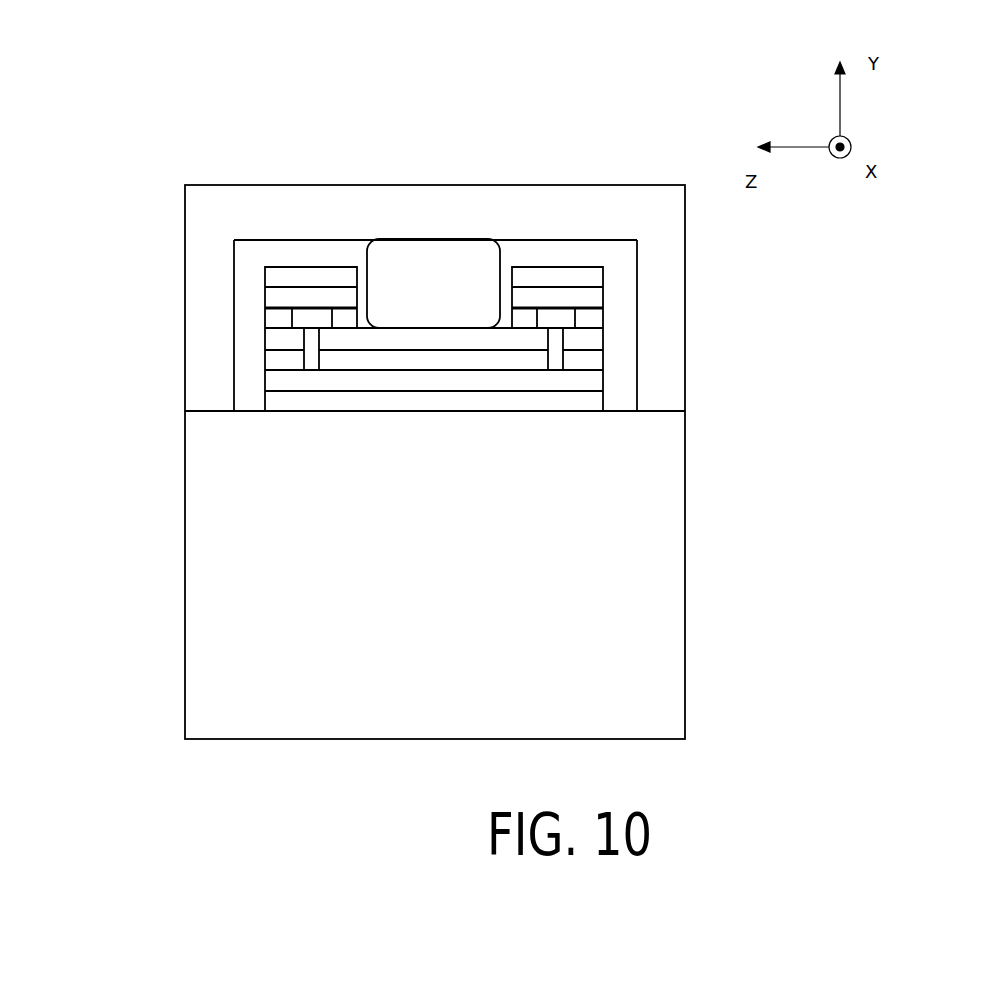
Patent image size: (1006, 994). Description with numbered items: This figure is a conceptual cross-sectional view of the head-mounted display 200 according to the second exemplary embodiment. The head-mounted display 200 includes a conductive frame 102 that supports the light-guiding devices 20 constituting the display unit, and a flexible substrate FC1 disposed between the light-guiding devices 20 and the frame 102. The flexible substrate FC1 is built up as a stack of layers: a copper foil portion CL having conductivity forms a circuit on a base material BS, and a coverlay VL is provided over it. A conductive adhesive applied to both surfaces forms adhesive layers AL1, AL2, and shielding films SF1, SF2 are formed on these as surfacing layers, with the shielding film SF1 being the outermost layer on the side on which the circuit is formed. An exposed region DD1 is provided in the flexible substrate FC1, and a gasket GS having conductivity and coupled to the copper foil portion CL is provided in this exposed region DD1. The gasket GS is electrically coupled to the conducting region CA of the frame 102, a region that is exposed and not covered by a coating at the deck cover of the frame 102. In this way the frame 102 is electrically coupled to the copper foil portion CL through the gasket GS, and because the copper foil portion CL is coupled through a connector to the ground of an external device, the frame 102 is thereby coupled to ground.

The head-mounted display 200 is at (383, 138).
The light-guiding device 20 is at (657, 595).
The frame 102 is at (490, 215).
The flexible substrate FC1 is at (251, 264).
The exposed region DD1 is at (507, 262).
The shielding film SF1 is at (318, 277).
The adhesive layer AL1 is at (280, 298).
The coverlay VL is at (527, 320).
The gasket GS is at (422, 267).
The copper foil portion CL is at (480, 340).
The conducting region CA is at (405, 242).
The base material BS is at (538, 363).
The adhesive layer AL2 is at (355, 382).
The shielding film SF2 is at (430, 404).